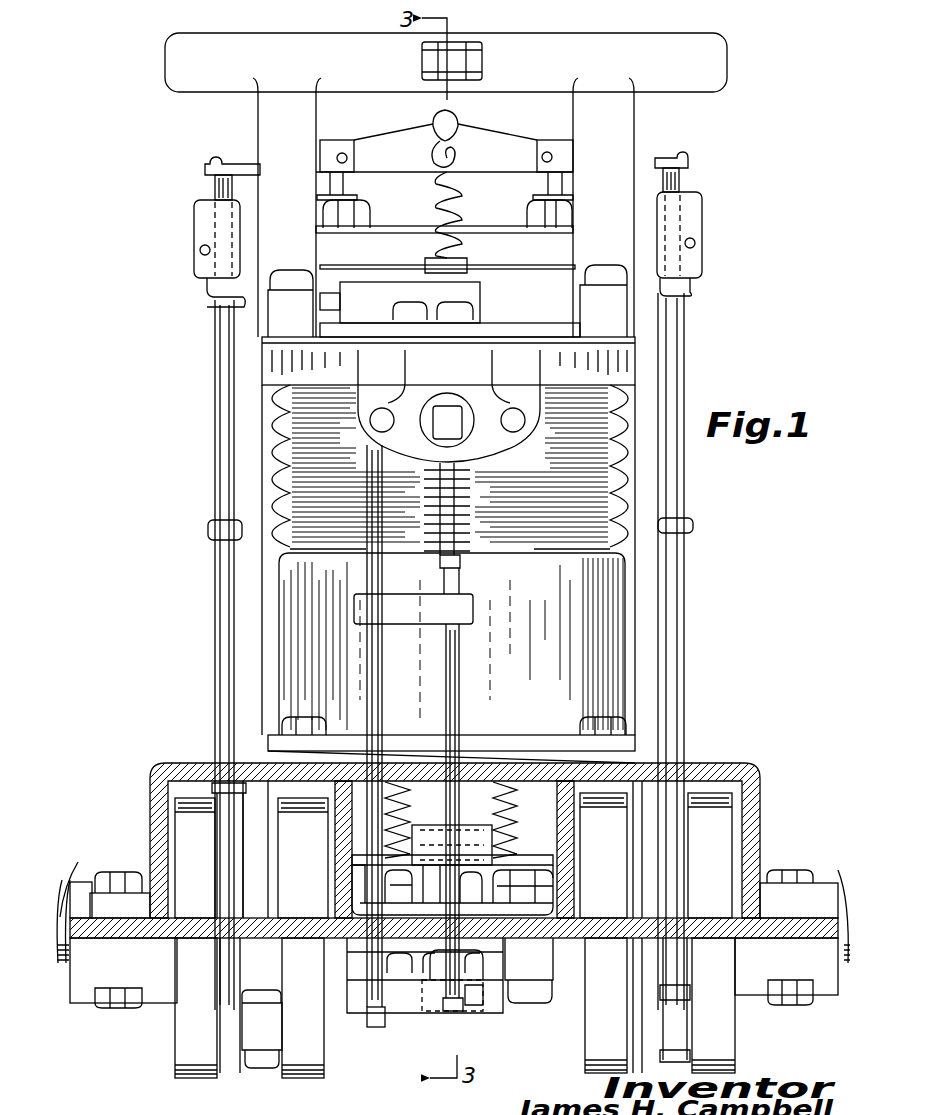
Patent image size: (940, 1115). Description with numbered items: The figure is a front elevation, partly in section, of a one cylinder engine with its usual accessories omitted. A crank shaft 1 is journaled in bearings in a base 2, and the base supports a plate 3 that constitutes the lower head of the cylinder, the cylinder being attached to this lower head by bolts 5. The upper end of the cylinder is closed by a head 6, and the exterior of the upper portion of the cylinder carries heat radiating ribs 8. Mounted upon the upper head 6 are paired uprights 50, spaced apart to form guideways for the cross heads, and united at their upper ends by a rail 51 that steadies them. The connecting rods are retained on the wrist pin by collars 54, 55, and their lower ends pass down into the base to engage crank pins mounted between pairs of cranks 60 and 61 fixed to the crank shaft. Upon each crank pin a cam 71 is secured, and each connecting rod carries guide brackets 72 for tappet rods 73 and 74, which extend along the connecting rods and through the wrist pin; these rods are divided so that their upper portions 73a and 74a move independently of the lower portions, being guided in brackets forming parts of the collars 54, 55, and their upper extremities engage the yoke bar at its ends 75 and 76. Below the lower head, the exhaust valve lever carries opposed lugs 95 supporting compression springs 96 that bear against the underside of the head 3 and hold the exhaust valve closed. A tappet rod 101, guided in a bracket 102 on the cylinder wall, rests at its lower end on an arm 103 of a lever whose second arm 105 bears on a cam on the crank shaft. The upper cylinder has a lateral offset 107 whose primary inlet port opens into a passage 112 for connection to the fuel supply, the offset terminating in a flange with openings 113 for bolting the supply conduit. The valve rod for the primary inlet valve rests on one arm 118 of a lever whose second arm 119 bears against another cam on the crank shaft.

The crank shaft 1 is at (72, 901).
The base 2 is at (750, 828).
The plate 3 is at (706, 762).
The bolts 5 is at (280, 710).
The head 6 is at (597, 343).
The heat radiating ribs 8 is at (273, 438).
The uprights 50 is at (270, 130).
The rail 51 is at (676, 33).
The collar 54 is at (198, 215).
The collar 55 is at (696, 216).
The cranks 60 is at (190, 1032).
The cranks 61 is at (597, 1028).
The cam 71 is at (232, 1065).
The guide brackets 72 is at (208, 528).
The tappet rod 73 is at (225, 557).
The upper portion of tappet rod 73a is at (221, 187).
The tappet rod 74 is at (673, 372).
The upper portion of tappet rod 74a is at (672, 183).
The end of yoke bar 75 is at (210, 163).
The end of yoke bar 76 is at (683, 156).
The lugs 95 is at (385, 858).
The compression springs 96 is at (407, 820).
The tappet rod 101 is at (379, 688).
The bracket 102 is at (408, 600).
The arm 103 is at (380, 1030).
The arm 105 is at (433, 1000).
The lateral offset 107 is at (403, 392).
The passage 112 is at (474, 393).
The openings 113 is at (513, 408).
The arm 118 is at (456, 1012).
The arm 119 is at (483, 998).